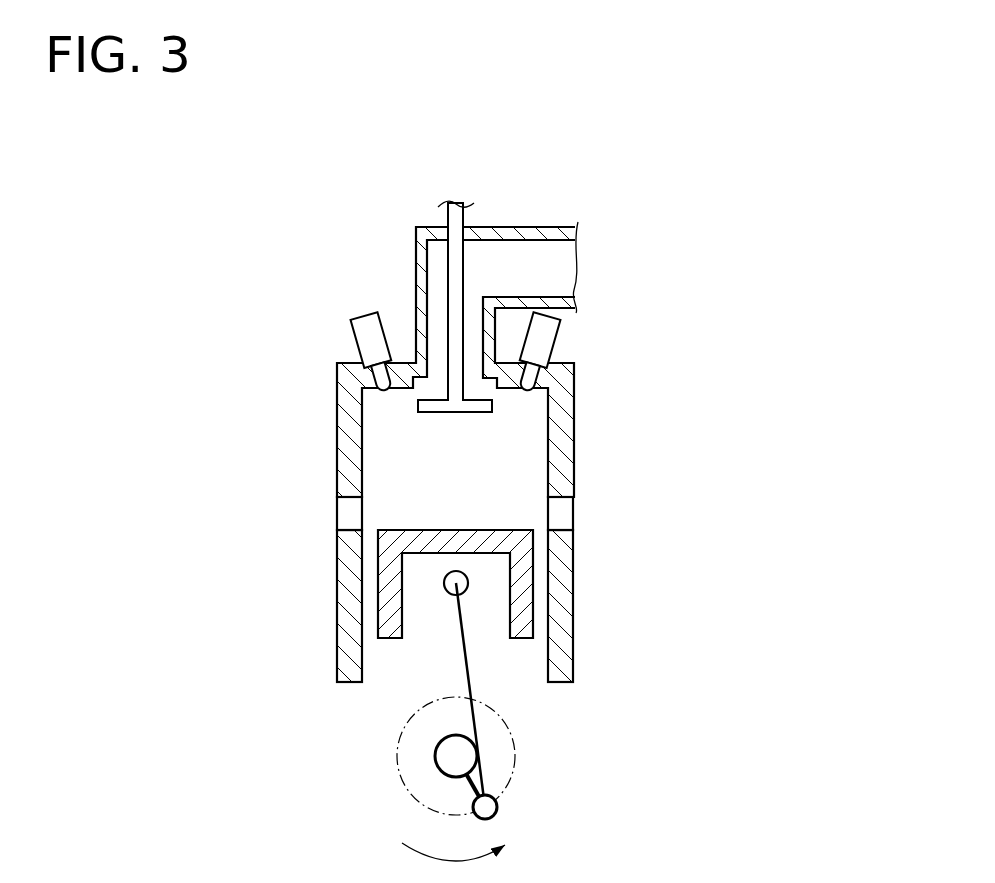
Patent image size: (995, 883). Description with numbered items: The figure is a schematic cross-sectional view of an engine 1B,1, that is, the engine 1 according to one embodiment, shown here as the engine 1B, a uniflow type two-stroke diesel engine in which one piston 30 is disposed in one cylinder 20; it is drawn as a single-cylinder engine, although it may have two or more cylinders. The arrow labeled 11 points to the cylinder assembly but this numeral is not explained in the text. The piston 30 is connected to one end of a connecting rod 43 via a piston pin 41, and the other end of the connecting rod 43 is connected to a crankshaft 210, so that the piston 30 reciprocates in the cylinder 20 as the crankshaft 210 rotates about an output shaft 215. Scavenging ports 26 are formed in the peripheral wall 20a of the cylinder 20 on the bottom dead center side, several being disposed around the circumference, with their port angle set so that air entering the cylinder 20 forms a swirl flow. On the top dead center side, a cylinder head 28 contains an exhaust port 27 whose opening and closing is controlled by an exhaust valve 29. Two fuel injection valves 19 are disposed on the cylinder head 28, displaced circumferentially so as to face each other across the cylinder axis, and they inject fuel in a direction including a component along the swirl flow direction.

The engine 1B,1 is at (505, 466).
The engine 1B is at (505, 466).
The engine 1 is at (657, 123).
The engine body 11 is at (645, 455).
The fuel injection valve 19 is at (352, 338).
The cylinder 20 is at (574, 628).
The peripheral wall 20a is at (567, 588).
The scavenging port 26 is at (345, 517).
The exhaust port 27 is at (424, 387).
The cylinder head 28 is at (566, 357).
The exhaust valve 29 is at (448, 278).
The piston 30 is at (445, 530).
The piston pin 41 is at (450, 592).
The connecting rod 43 is at (470, 685).
The crankshaft 210 is at (523, 777).
The output shaft 215 is at (435, 748).